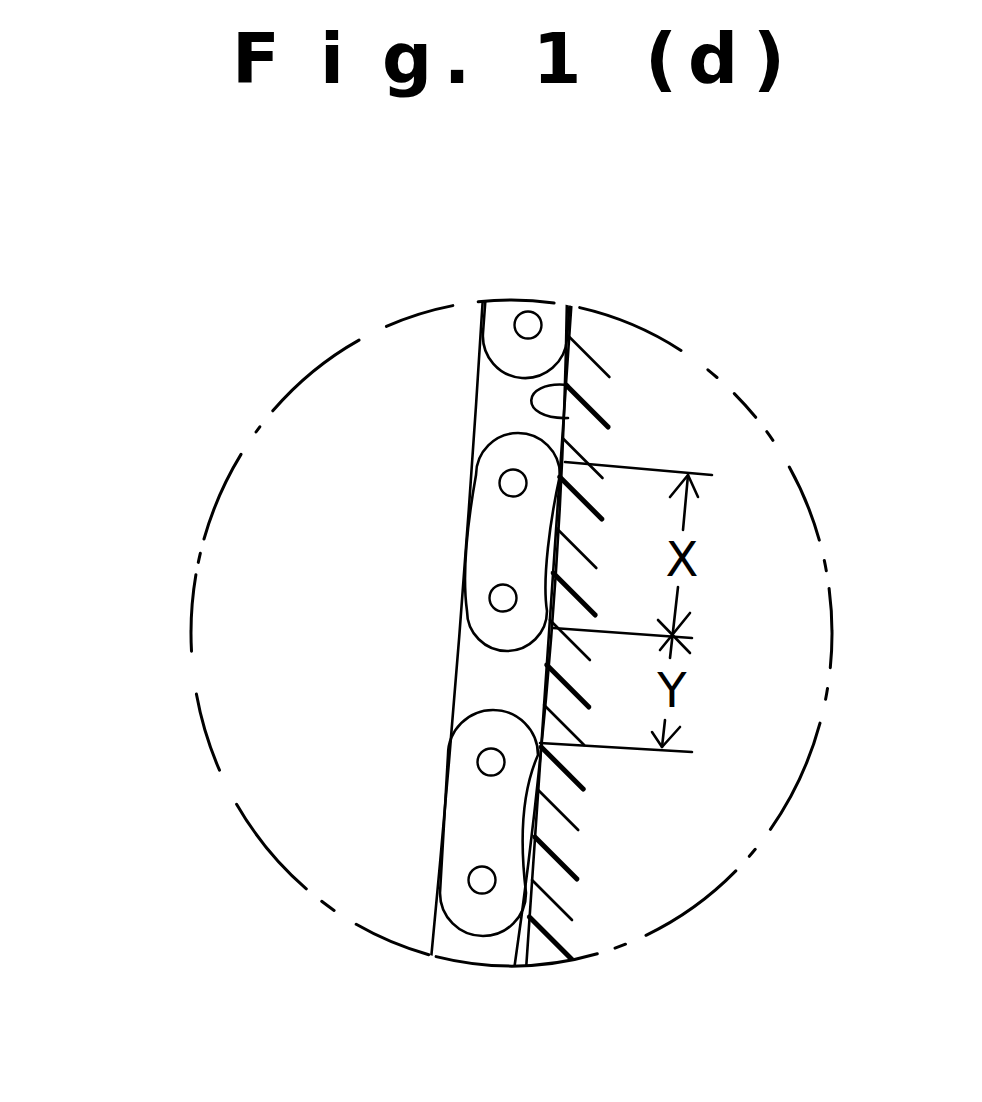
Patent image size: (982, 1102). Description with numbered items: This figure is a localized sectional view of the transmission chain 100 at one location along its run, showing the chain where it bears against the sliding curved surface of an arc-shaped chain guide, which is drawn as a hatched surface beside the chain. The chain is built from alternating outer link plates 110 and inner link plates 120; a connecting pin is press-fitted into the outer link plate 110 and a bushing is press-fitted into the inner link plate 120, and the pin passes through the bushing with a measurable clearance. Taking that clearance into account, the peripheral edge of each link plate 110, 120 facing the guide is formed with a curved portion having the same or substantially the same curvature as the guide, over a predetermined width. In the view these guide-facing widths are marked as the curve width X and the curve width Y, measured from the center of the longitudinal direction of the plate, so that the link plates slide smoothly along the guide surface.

The transmission chain 100 is at (310, 564).
The outer link plate 110 is at (490, 555).
The inner link plate 120 is at (100, 805).